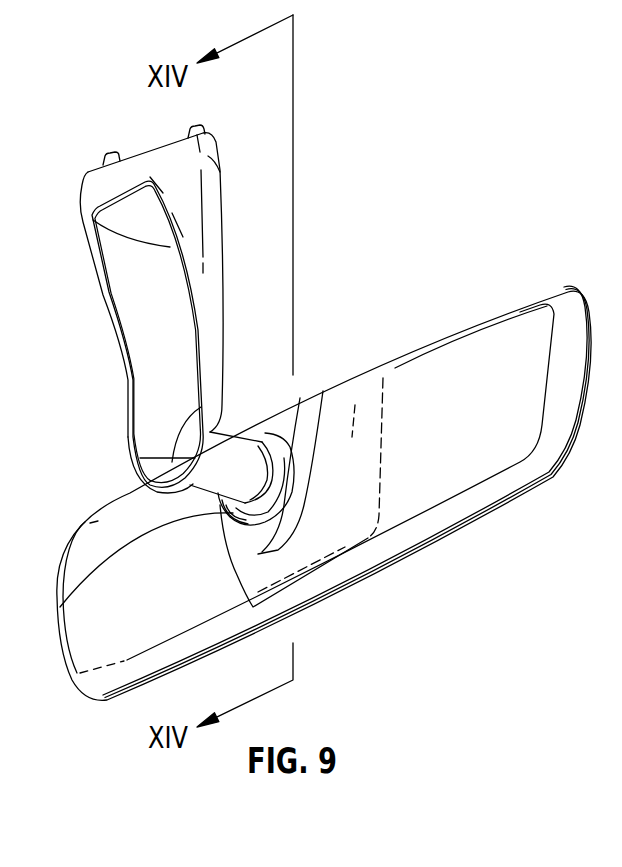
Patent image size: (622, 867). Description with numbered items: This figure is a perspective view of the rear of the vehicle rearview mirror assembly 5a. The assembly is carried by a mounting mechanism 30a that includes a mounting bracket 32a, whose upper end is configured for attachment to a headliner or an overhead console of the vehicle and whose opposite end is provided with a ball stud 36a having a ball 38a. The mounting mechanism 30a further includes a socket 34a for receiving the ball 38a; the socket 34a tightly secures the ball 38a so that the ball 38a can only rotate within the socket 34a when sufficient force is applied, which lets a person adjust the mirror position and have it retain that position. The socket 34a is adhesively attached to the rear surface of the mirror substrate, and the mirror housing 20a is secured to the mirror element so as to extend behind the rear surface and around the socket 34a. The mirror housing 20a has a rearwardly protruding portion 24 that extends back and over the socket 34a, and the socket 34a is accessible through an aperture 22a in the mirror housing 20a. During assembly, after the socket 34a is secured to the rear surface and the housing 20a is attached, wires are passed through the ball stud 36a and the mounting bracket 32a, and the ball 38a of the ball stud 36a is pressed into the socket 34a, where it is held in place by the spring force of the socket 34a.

The rearview mirror assembly 5a is at (475, 132).
The mirror housing 20a is at (297, 479).
The aperture 22a is at (108, 502).
The rearwardly protruding portion 24 is at (337, 439).
The mounting mechanism 30a is at (116, 309).
The mounting bracket 32a is at (96, 282).
The socket 34a is at (254, 437).
The ball stud 36a is at (348, 543).
The ball 38a is at (283, 477).